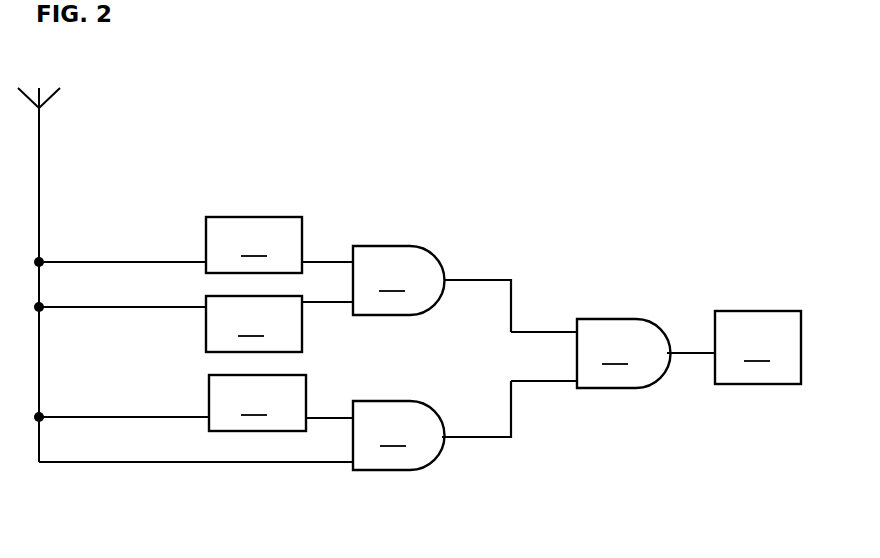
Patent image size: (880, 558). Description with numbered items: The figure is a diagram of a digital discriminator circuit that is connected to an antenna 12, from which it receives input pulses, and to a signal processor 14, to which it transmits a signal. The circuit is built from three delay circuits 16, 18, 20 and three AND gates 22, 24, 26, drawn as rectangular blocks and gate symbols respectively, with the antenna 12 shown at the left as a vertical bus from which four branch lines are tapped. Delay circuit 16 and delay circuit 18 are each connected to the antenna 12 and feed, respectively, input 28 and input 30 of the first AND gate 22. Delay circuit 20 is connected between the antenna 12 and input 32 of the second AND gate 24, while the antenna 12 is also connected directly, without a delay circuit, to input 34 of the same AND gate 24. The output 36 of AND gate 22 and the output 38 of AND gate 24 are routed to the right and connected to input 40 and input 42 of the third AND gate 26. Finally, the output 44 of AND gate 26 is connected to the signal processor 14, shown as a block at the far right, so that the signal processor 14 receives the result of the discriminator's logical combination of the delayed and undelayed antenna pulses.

The antenna 12 is at (39, 146).
The signal processor 14 is at (758, 347).
The delay circuit 16 is at (254, 245).
The delay circuit 18 is at (254, 324).
The delay circuit 20 is at (257, 403).
The AND gate 22 is at (399, 280).
The AND gate 24 is at (399, 435).
The AND gate 26 is at (624, 353).
The input 28 is at (329, 261).
The input 30 is at (328, 304).
The input 32 is at (334, 416).
The input 34 is at (340, 463).
The output 36 is at (480, 279).
The output 38 is at (472, 439).
The input 40 is at (540, 331).
The input 42 is at (557, 383).
The output 44 is at (688, 352).